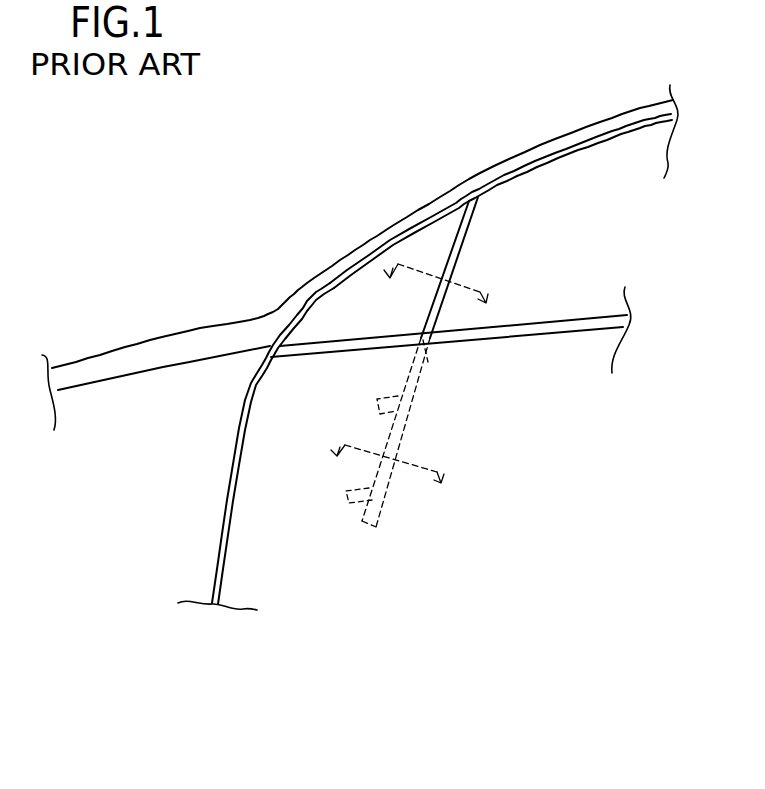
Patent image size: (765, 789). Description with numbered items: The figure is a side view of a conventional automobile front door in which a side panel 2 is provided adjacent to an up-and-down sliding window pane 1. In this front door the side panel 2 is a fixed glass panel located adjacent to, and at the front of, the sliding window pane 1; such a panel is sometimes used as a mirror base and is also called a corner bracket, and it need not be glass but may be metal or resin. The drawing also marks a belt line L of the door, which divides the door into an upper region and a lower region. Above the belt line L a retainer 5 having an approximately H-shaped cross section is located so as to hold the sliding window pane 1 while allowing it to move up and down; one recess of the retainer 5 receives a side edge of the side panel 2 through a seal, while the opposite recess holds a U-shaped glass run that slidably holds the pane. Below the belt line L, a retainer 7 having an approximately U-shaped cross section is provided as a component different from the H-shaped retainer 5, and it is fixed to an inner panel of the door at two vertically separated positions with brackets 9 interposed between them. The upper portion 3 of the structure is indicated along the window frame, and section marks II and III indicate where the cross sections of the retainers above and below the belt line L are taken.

The sliding window pane 1 is at (582, 177).
The side panel 2 is at (423, 245).
The roof side rail outer panel 3 is at (510, 186).
The retainer 5 is at (463, 235).
The retainer 7 is at (420, 397).
The bracket 9 is at (380, 397).
The belt line L is at (569, 313).
The section line II- II is at (438, 292).
The section line III- III is at (385, 469).